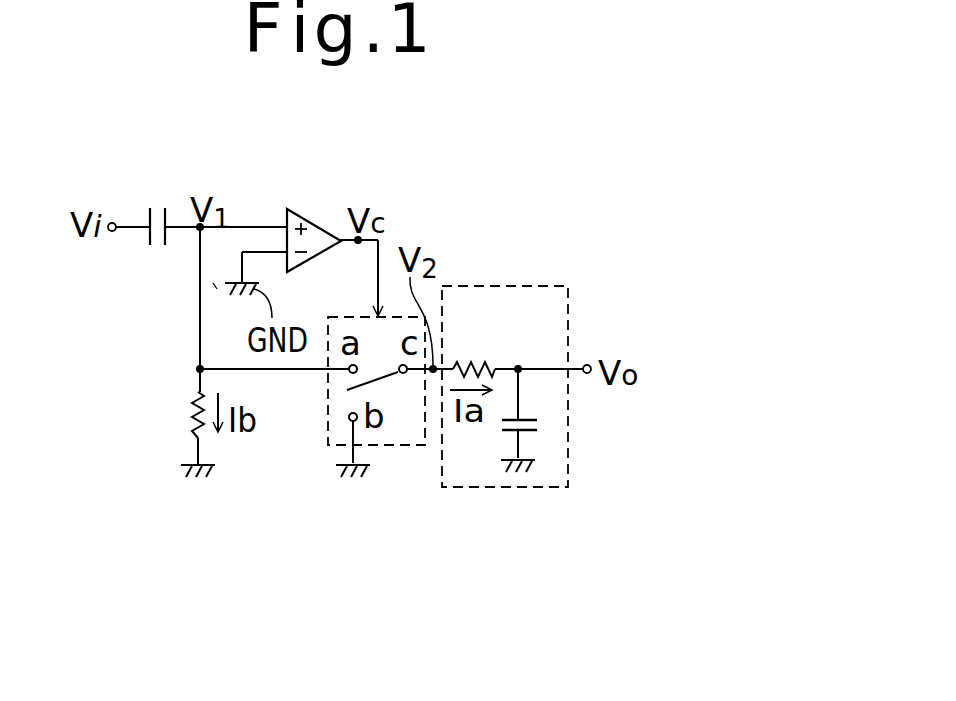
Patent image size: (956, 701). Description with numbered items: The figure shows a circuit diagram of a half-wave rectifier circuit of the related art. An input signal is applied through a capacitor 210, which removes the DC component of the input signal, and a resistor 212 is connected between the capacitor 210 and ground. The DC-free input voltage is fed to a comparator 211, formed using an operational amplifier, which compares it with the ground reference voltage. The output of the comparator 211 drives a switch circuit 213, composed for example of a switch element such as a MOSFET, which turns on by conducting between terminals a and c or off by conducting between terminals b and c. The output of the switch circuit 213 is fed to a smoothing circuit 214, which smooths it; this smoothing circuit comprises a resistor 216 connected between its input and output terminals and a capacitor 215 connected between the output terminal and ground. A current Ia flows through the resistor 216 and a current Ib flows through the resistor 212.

The capacitor C1 210 is at (160, 202).
The comparator 211 is at (306, 218).
The resistor R1 212 is at (143, 427).
The switch circuit 213 is at (400, 448).
The smoothing circuit 214 is at (512, 282).
The capacitor C2 215 is at (540, 425).
The resistor R2 216 is at (485, 367).